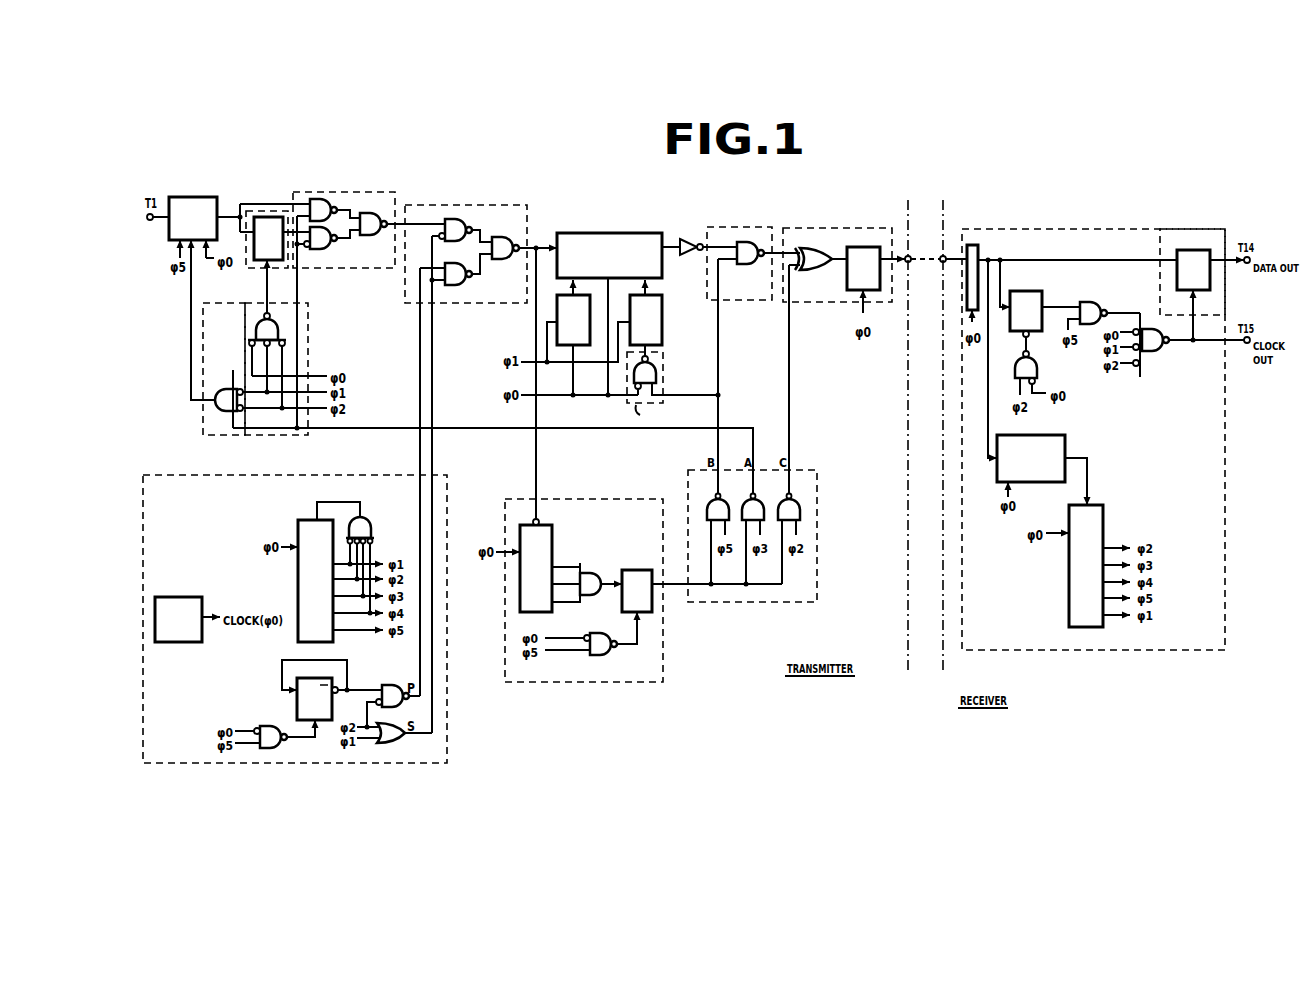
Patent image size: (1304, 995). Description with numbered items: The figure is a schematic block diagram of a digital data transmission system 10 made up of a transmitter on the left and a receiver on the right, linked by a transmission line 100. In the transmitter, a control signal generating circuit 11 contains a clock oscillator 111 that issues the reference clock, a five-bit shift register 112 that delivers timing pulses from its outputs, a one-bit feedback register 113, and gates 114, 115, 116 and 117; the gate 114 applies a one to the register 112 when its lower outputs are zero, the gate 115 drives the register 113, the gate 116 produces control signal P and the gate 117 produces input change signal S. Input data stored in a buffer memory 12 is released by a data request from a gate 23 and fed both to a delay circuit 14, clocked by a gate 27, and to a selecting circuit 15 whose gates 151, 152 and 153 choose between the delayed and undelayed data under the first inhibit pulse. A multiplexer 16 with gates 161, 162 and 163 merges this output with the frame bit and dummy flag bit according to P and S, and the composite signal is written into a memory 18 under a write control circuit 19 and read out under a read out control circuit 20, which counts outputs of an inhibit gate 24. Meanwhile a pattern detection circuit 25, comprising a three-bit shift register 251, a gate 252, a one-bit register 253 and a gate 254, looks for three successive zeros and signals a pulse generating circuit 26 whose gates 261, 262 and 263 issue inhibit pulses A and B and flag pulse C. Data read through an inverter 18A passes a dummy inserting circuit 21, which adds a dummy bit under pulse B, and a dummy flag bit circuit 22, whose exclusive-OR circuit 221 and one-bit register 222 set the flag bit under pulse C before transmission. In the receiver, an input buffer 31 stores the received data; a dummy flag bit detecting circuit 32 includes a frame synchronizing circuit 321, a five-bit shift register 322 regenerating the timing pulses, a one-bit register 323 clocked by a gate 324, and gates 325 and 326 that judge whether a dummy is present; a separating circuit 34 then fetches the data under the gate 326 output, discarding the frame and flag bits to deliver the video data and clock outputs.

The digital data transmission system 10 is at (913, 751).
The control signal generating circuit 11 is at (315, 763).
The clock oscillator 111 is at (185, 642).
The shift register 112 is at (298, 580).
The shift register 113 is at (336, 678).
The gate 114 is at (372, 522).
The gate 115 is at (272, 726).
The gate 116 is at (392, 685).
The gate 117 is at (400, 740).
The buffer memory 12 is at (204, 197).
The delay circuit 14 is at (250, 211).
The selecting circuit 15 is at (370, 192).
The gate 151 is at (325, 199).
The gate 152 is at (325, 249).
The gate 153 is at (372, 249).
The multiplexer 16 is at (470, 205).
The gate 161 is at (466, 220).
The gate 162 is at (460, 285).
The gate 163 is at (495, 268).
The memory 18 is at (597, 233).
The inverter 18A is at (688, 238).
The write control circuit 19 is at (557, 302).
The read out control circuit 20 is at (662, 302).
The dummy inserting circuit 21 is at (722, 227).
The dummy flag bit circuit 22 is at (815, 228).
The exclusive-OR circuit 221 is at (808, 272).
The shift register 222 is at (880, 282).
The gate 23 is at (204, 436).
The inhibit gate 24 is at (663, 372).
The pattern detection circuit 25 is at (528, 682).
The shift register 251 is at (552, 545).
The gate 252 is at (592, 573).
The shift register 253 is at (636, 570).
The gate 254 is at (610, 655).
The pulse generating circuit 26 is at (720, 602).
The gate 261 is at (744, 503).
The gate 262 is at (708, 503).
The gate 263 is at (780, 503).
The gate 27 is at (288, 436).
The transmission line 100 is at (922, 258).
The input buffer 31 is at (980, 240).
The dummy flag bit detecting circuit 32 is at (1025, 650).
The frame synchronizing circuit 321 is at (1066, 447).
The shift register 322 is at (1069, 610).
The shift register 323 is at (1040, 293).
The gate 324 is at (1037, 370).
The gate 325 is at (1093, 302).
The gate 326 is at (1153, 352).
The separating circuit 34 is at (1205, 217).